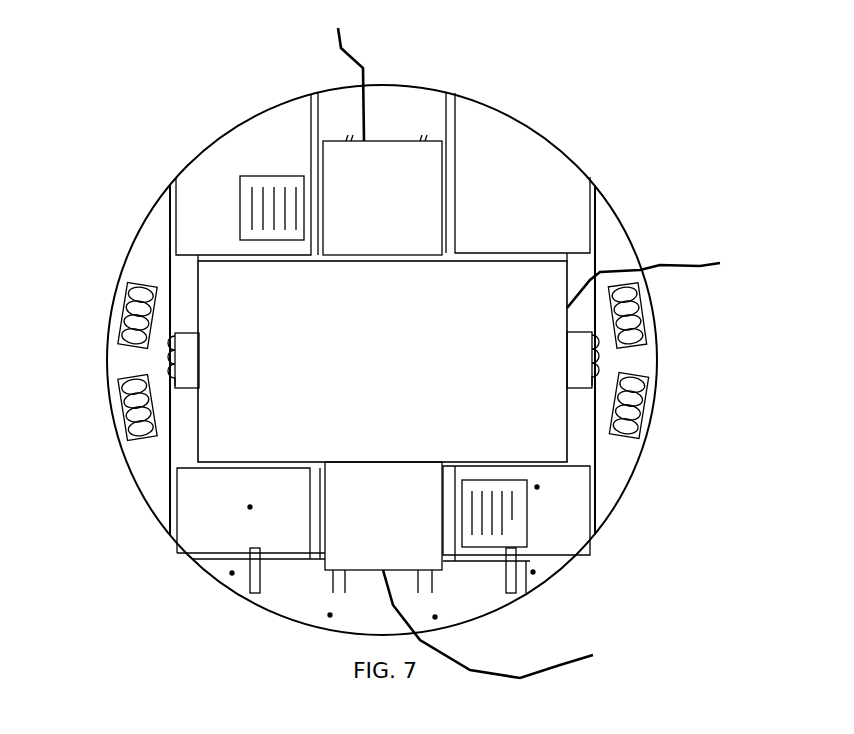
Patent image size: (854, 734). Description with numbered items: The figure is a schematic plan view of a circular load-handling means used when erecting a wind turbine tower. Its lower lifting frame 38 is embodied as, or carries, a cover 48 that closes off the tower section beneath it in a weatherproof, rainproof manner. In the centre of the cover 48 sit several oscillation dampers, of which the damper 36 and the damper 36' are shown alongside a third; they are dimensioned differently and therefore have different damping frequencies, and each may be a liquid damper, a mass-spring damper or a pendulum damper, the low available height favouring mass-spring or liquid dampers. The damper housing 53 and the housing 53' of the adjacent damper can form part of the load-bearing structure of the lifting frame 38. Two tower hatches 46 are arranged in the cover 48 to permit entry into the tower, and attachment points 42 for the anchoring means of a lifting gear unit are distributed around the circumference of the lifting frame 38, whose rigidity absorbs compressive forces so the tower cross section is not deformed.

The lower lifting frame 38 is at (583, 162).
The oscillation damper 36 is at (428, 340).
The oscillation damper 36' is at (386, 149).
The attachment points 42 is at (122, 337).
The tower hatches 46 is at (272, 176).
The cover 48 is at (285, 577).
The housing 53 is at (665, 282).
The housing 53' is at (342, 73).